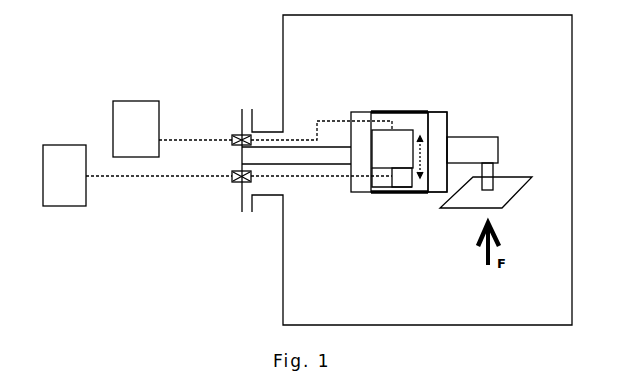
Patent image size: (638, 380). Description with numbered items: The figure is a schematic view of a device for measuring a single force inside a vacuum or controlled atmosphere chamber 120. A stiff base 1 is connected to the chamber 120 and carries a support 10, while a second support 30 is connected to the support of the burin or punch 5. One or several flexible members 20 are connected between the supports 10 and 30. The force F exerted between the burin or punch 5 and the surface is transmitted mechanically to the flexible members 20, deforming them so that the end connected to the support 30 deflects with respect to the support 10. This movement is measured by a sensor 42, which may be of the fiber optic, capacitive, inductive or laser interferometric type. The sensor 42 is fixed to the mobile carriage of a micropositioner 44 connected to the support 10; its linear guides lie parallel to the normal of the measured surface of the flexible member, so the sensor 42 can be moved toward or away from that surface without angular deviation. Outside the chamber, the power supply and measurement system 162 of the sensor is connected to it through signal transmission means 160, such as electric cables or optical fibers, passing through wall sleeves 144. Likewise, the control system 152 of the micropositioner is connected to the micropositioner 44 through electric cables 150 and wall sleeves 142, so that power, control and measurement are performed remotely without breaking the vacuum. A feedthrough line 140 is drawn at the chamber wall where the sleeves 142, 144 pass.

The stiff base 1 is at (313, 162).
The burin or punch 5 is at (496, 175).
The support 10 is at (357, 112).
The flexible members 20 is at (389, 112).
The support 30 is at (435, 112).
The sensor 42 is at (408, 192).
The micropositioner 44 is at (384, 189).
The vacuum or controlled atmosphere chamber 120 is at (283, 66).
The feedthrough / wall 140 is at (240, 131).
The wall sleeves 142 is at (235, 137).
The wall sleeves 144 is at (233, 183).
The electric cables 150 is at (200, 139).
The control system 152 is at (131, 108).
The means for the transmission of the signal 160 is at (143, 178).
The power supply and measurement system 162 is at (68, 196).